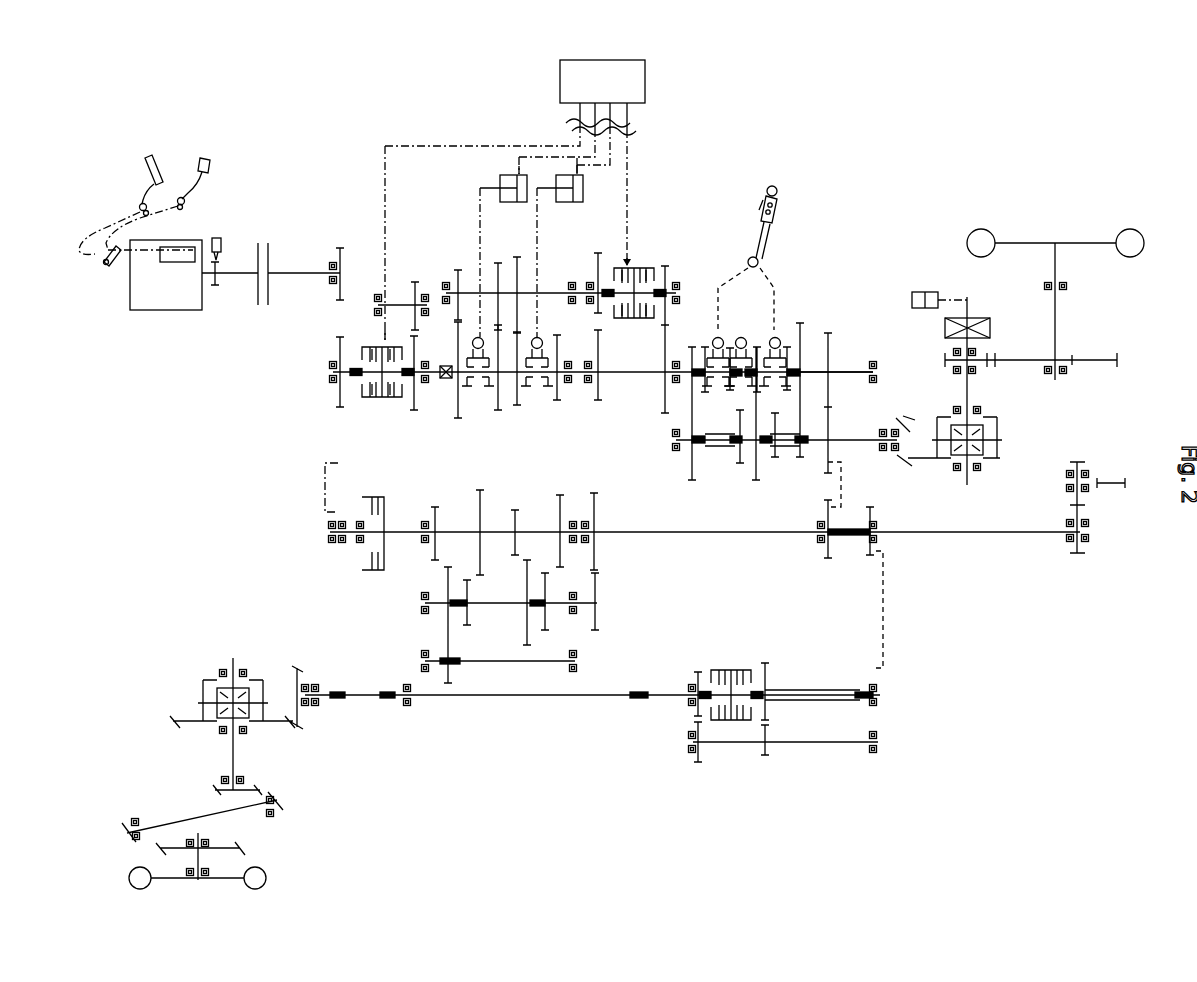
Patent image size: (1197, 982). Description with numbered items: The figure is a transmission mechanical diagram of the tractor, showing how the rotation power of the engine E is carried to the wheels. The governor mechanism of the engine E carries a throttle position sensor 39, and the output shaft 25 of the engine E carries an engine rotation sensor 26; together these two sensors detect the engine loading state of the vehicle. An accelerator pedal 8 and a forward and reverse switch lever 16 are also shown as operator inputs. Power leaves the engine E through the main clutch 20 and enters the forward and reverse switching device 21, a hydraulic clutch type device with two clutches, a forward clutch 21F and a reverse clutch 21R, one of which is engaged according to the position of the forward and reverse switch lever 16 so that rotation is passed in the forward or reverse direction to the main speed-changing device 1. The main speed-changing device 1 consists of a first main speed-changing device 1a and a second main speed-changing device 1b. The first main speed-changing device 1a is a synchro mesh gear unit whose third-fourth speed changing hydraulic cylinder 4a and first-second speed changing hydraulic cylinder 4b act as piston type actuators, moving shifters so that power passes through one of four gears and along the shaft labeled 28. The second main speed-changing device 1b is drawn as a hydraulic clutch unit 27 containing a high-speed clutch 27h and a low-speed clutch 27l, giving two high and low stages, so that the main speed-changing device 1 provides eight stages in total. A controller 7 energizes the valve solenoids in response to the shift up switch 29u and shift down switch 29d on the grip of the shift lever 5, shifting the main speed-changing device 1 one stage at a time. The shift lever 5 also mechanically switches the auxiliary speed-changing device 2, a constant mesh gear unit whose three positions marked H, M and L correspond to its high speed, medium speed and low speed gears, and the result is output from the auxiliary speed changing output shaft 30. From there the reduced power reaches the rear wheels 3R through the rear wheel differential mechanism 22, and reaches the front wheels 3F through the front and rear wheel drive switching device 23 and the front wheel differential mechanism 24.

The engine E is at (143, 312).
The accelerator pedal 8 is at (154, 158).
The forward and reverse switch lever 16 is at (204, 158).
The throttle position sensor 39 is at (106, 270).
The output shaft 25 is at (228, 282).
The engine rotation sensor 26 is at (222, 238).
The main clutch 20 is at (272, 262).
The controller 7 is at (645, 78).
The third-fourth speed changing hydraulic cylinder 4a is at (500, 178).
The first-second speed changing hydraulic cylinder 4b is at (583, 193).
The shift lever 5 is at (768, 189).
The shift up switch 29u is at (775, 202).
The shift down switch 29d is at (775, 213).
The main speed-changing device 1 is at (603, 353).
The first main speed-changing device 1a is at (528, 410).
The second main speed-changing device 1b is at (584, 324).
The forward and reverse switching device 21 is at (404, 282).
The forward clutch 21F is at (364, 400).
The reverse clutch 21R is at (396, 400).
The high-low clutch 27 is at (663, 259).
The high-speed clutch 27h is at (628, 266).
The low-speed clutch 27l is at (650, 270).
The transmission shaft 28 is at (627, 357).
The auxiliary speed-changing device 2 is at (794, 415).
The high speed position H is at (718, 351).
The middle speed position M is at (741, 351).
The low speed position L is at (775, 351).
The auxiliary speed changing output shaft 30 is at (848, 372).
The rear wheel differential mechanism 22 is at (950, 486).
The rear wheels 3R is at (966, 243).
The front and rear wheel drive switching device 23 is at (742, 665).
The front wheel differential mechanism 24 is at (270, 657).
The front wheels 3F is at (129, 879).